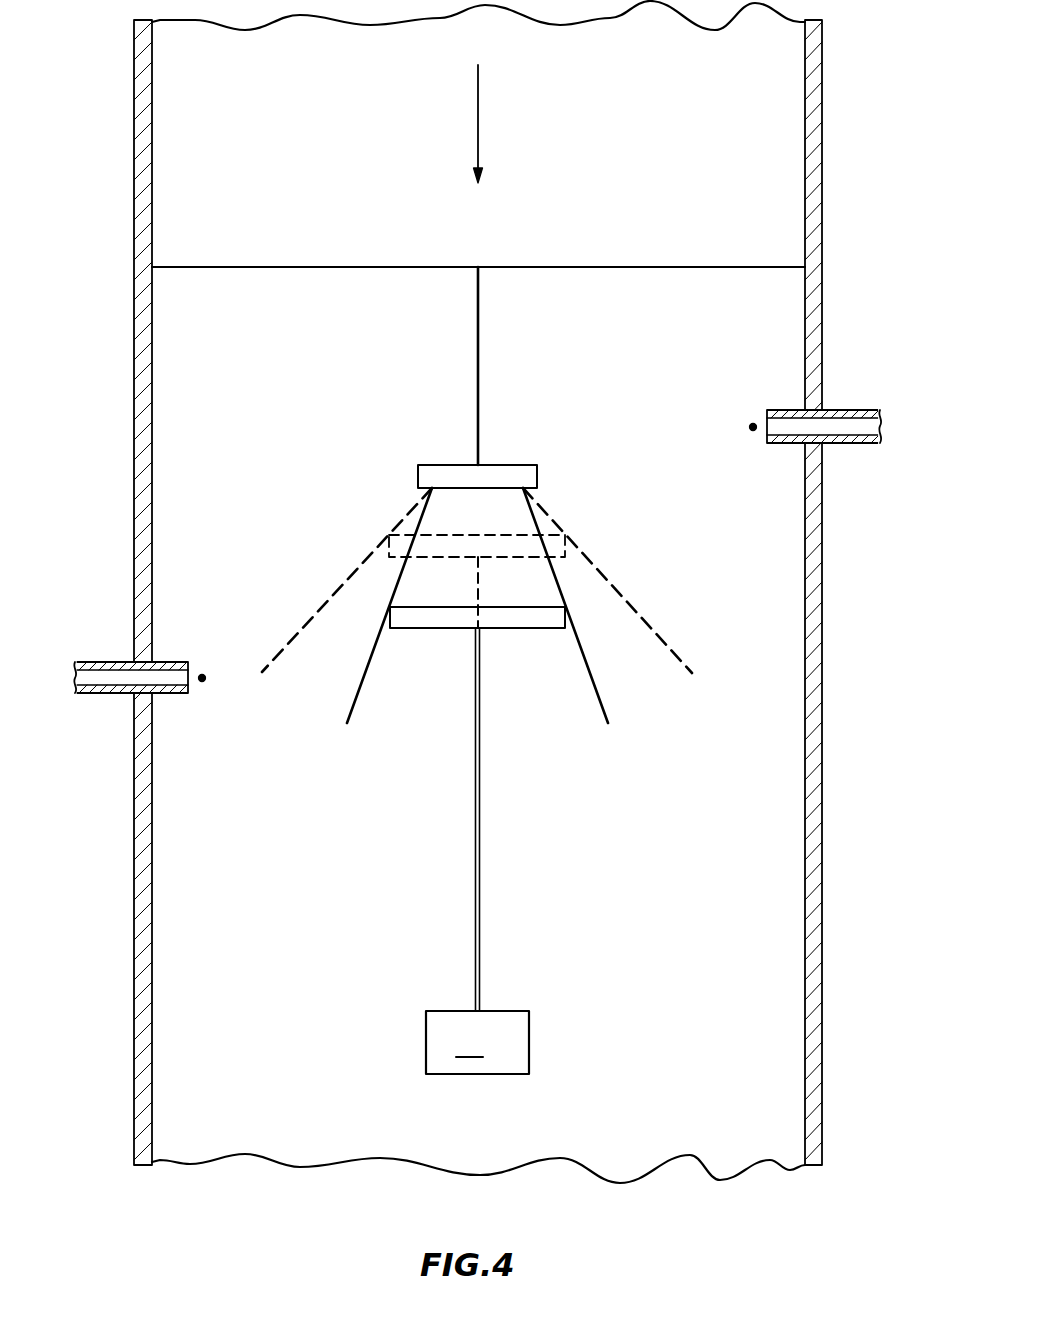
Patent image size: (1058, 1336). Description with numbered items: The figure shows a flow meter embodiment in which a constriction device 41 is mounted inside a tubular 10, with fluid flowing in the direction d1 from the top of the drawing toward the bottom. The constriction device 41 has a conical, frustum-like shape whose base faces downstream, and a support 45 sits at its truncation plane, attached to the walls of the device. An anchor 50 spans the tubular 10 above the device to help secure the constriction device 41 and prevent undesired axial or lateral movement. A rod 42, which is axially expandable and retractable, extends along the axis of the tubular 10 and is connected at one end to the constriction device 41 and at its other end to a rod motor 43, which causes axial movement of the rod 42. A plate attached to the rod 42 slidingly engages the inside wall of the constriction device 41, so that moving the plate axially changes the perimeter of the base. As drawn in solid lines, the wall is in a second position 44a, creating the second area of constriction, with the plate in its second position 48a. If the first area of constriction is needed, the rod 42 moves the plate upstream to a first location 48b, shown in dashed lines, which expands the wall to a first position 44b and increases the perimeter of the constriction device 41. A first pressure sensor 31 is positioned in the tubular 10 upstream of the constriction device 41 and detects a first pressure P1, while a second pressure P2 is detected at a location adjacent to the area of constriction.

The tubular 10 is at (822, 228).
The first pressure sensor 31 is at (838, 425).
The constriction device 41 is at (499, 670).
The rod 42 is at (480, 777).
The rod motor 43 is at (477, 1042).
The second position of the wall 44a is at (602, 693).
The first position of the wall 44b is at (602, 568).
The support 45 is at (518, 465).
The second position of the plate 48a is at (510, 630).
The first location of the plate 48b is at (570, 537).
The anchor 50 is at (478, 285).
The direction of fluid flow d1 is at (478, 112).
The first pressure P1 is at (753, 427).
The second pressure P2 is at (202, 678).